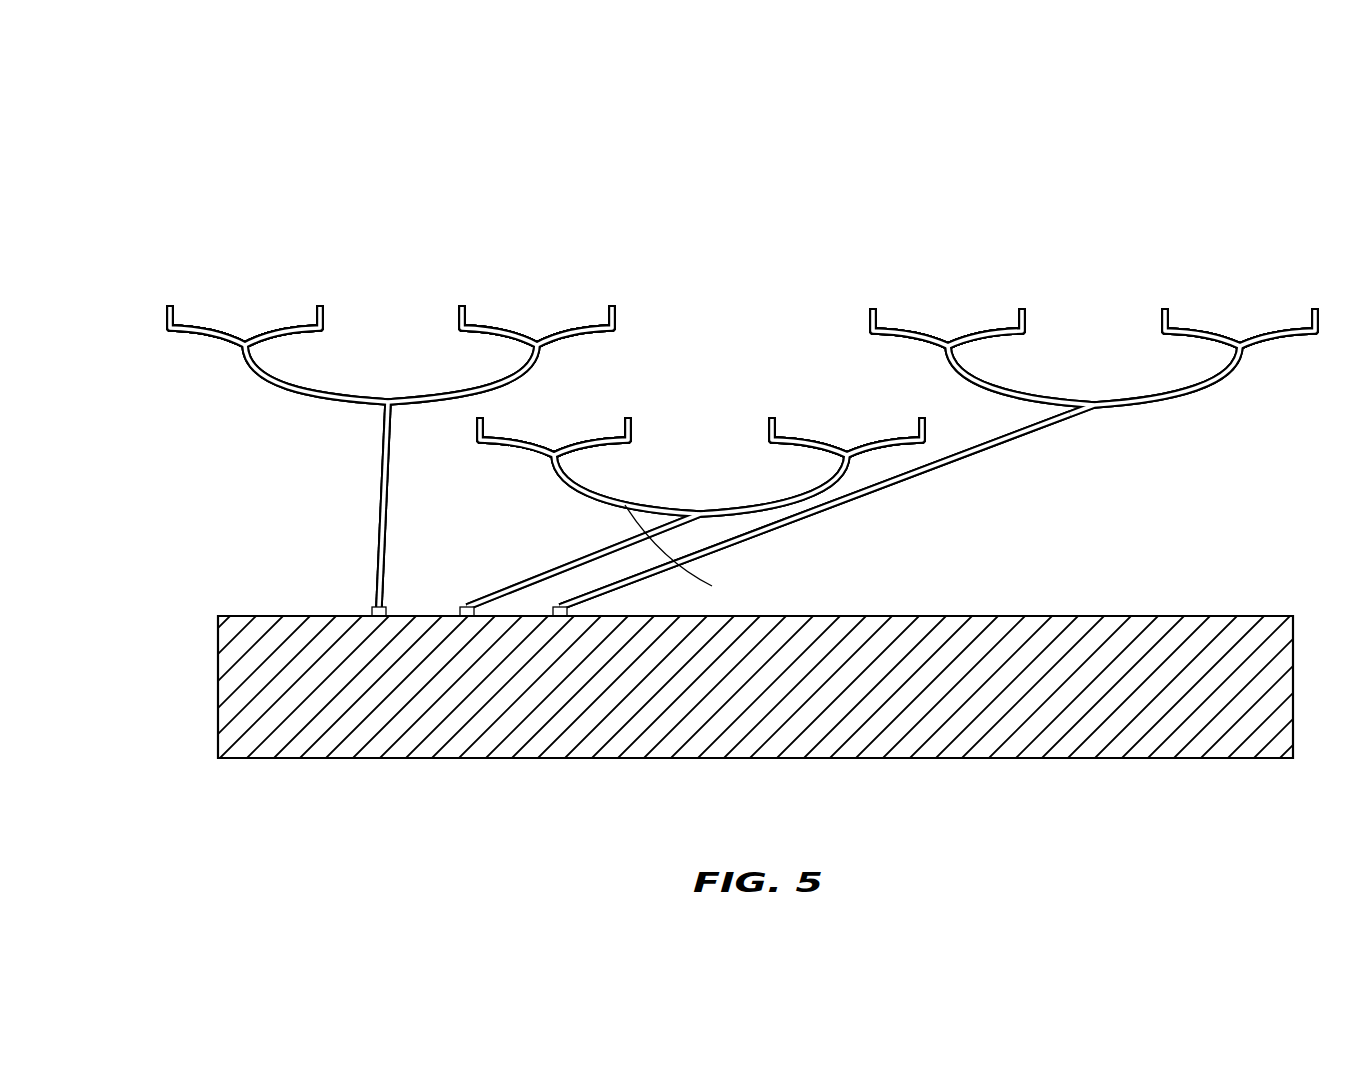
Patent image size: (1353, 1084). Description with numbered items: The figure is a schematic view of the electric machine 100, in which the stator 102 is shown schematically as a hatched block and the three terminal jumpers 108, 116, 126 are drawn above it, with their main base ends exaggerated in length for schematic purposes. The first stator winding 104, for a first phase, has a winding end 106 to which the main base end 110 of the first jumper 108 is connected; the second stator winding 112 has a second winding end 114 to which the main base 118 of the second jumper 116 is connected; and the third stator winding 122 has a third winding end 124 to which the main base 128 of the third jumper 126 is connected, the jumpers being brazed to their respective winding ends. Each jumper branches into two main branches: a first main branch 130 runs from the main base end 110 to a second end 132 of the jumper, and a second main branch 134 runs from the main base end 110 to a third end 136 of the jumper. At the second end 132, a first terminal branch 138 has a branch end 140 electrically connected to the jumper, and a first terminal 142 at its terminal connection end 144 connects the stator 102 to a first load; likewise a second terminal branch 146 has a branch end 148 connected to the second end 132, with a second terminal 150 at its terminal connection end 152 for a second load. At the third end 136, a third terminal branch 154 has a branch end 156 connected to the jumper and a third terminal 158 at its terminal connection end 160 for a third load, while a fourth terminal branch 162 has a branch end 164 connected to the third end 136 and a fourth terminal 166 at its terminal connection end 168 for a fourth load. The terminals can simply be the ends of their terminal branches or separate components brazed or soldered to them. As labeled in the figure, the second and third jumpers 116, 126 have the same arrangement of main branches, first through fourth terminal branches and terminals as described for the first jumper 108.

The electric machine 100 is at (135, 150).
The stator 102 is at (218, 690).
The first stator winding 104 is at (300, 658).
The winding end 106 is at (375, 605).
The first jumper 108 is at (383, 300).
The main base end 110 is at (385, 412).
The second stator winding 112 is at (335, 710).
The second winding end 114 is at (465, 605).
The second jumper 116 is at (712, 410).
The main base 118 is at (690, 495).
The third stator winding 122 is at (448, 700).
The third winding end 124 is at (560, 605).
The third jumper 126 is at (1091, 292).
The main base 128 is at (1100, 425).
The first main branch 130 is at (305, 392).
The second end 132 is at (240, 350).
The second main branch 134 is at (482, 393).
The third end 136 is at (543, 351).
The first terminal branch 138 is at (187, 327).
The branch end 140 is at (238, 330).
The first terminal 142 is at (166, 303).
The terminal connection end 144 is at (380, 366).
The second terminal branch 146 is at (298, 325).
The branch end 148 is at (258, 330).
The second terminal 150 is at (323, 303).
The terminal connection end 152 is at (616, 257).
The third terminal branch 154 is at (503, 328).
The branch end 156 is at (530, 330).
The third terminal 158 is at (460, 322).
The terminal connection end 160 is at (886, 315).
The fourth terminal branch 162 is at (588, 326).
The branch end 164 is at (561, 330).
The fourth terminal 166 is at (620, 315).
The terminal connection end 168 is at (611, 296).